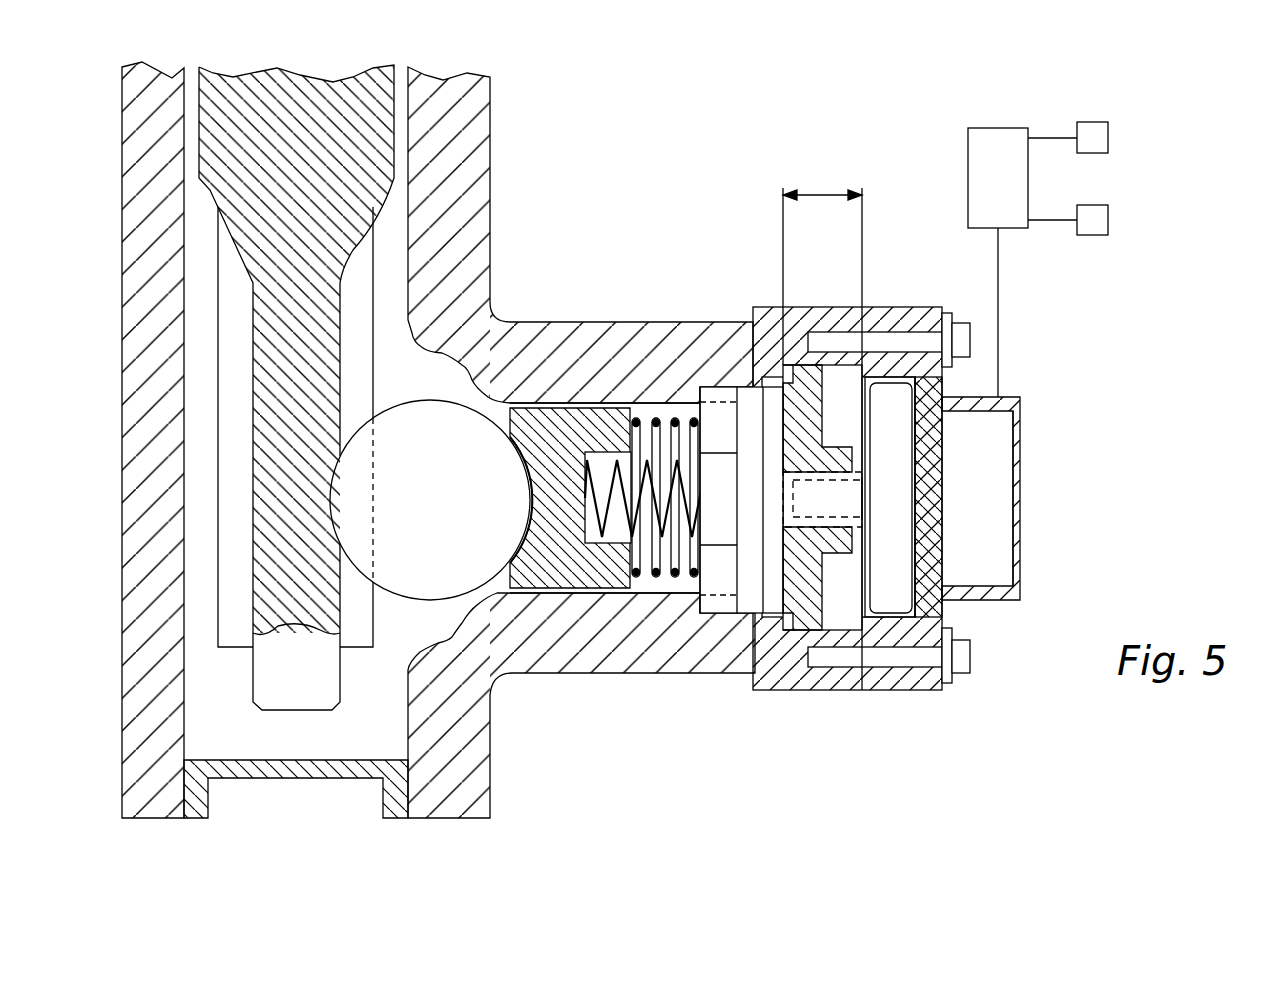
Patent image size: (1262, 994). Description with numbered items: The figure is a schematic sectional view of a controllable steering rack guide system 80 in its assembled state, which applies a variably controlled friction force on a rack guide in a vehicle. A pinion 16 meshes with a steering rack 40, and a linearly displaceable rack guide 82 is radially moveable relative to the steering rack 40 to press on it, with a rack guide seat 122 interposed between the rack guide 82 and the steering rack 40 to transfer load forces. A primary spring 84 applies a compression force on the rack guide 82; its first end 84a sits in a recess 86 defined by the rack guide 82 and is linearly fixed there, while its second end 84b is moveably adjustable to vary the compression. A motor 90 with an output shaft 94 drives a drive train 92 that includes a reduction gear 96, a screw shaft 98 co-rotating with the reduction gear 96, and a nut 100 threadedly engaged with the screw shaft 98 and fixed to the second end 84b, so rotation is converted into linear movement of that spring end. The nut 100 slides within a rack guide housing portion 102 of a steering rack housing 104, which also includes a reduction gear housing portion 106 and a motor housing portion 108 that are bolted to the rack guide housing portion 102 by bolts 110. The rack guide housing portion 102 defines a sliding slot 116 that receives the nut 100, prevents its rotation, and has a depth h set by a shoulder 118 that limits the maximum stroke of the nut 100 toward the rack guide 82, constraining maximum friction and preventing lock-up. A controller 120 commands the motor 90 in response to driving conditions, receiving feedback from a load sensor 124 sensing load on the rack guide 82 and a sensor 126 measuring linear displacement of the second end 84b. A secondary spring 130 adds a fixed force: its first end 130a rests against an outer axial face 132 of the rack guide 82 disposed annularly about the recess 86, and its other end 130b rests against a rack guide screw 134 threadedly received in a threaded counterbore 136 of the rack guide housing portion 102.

The pinion 16 is at (348, 132).
The steering rack 40 is at (432, 442).
The controllable steering rack guide system 80 is at (829, 414).
The rack guide 82 is at (557, 562).
The primary spring 84 is at (763, 556).
The first end of primary spring 84a is at (698, 497).
The second end of primary spring 84b is at (789, 372).
The recess 86 is at (618, 535).
The motor 90 is at (987, 505).
The drive train 92 is at (930, 389).
The output shaft 94 is at (833, 498).
The reduction gear 96 is at (893, 528).
The screw shaft 98 is at (932, 467).
The nut 100 is at (802, 565).
The rack guide housing portion 102 is at (636, 400).
The steering rack housing 104 is at (500, 665).
The reduction gear housing portion 106 is at (900, 308).
The motor housing portion 108 is at (1023, 563).
The bolts 110 is at (965, 322).
The sliding slot 116 is at (794, 377).
The shoulder 118 is at (774, 468).
The controller 120 is at (1002, 128).
The rack guide seat 122 is at (516, 530).
The load sensor 124 is at (1104, 222).
The sensor 126 is at (1104, 136).
The secondary spring 130 is at (670, 590).
The first end of secondary spring 130a is at (636, 418).
The second end of secondary spring 130b is at (694, 418).
The outer axial face 132 is at (598, 462).
The rack guide screw 134 is at (722, 580).
The threaded counterbore 136 is at (740, 600).